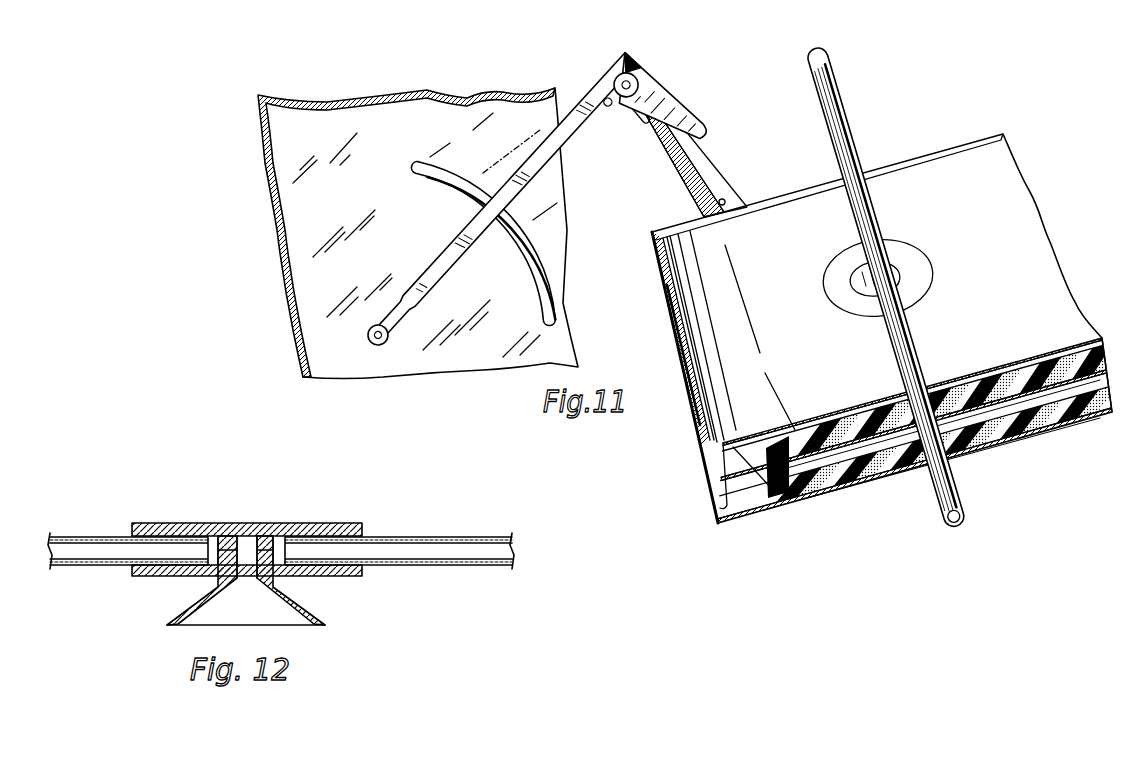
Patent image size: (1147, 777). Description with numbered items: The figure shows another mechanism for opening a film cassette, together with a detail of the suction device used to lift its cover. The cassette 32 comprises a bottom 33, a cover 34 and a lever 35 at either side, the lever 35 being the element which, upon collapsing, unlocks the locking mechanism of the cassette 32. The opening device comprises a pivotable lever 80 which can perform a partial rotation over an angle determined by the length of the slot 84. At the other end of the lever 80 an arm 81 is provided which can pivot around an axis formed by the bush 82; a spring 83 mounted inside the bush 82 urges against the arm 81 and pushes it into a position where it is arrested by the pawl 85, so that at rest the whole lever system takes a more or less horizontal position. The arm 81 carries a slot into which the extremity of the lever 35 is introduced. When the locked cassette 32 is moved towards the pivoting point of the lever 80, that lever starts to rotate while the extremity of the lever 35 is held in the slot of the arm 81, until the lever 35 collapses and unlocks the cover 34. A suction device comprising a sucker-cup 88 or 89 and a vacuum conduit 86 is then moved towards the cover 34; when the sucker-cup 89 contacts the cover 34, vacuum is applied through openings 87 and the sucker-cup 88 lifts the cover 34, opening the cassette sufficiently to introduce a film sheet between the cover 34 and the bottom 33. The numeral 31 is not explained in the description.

In FIG. 11, the glass pane 31 is at (290, 227).
In FIG. 11, the cassette 32 is at (1045, 237).
In FIG. 11, the bottom 33 is at (983, 436).
In FIG. 11, the cover 34 is at (680, 340).
In FIG. 11, the lever 35 is at (688, 173).
In FIG. 11, the pivotable lever 80 is at (570, 110).
In FIG. 11, the arm 81 is at (665, 88).
In FIG. 11, the bush 82 is at (639, 89).
In FIG. 11, the spring 83 is at (641, 70).
In FIG. 11, the slot 84 is at (546, 266).
In FIG. 11, the pawl 85 is at (606, 98).
In FIG. 11, the vacuum conduit 86 is at (832, 96).
In FIG. 12, the vacuum conduit 86 is at (405, 549).
In FIG. 12, the openings 87 is at (248, 550).
In FIG. 11, the sucker-cup 88 is at (917, 266).
In FIG. 12, the sucker-cup 89 is at (303, 607).